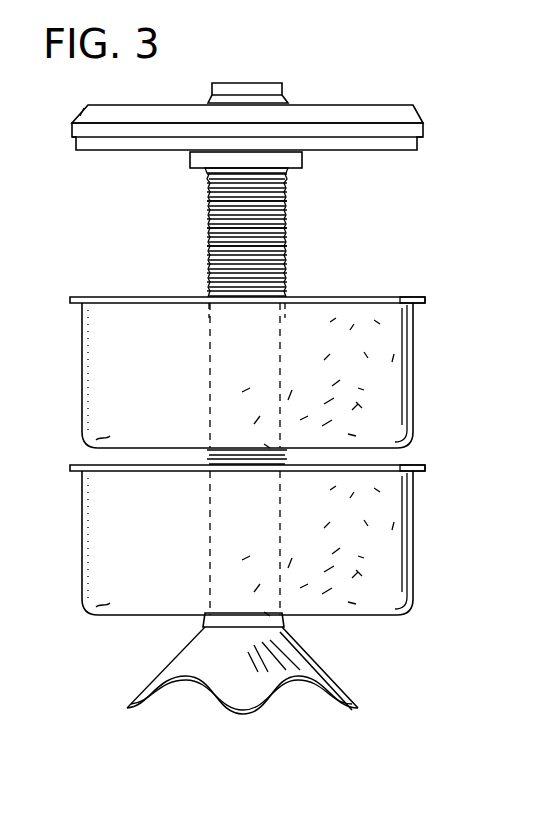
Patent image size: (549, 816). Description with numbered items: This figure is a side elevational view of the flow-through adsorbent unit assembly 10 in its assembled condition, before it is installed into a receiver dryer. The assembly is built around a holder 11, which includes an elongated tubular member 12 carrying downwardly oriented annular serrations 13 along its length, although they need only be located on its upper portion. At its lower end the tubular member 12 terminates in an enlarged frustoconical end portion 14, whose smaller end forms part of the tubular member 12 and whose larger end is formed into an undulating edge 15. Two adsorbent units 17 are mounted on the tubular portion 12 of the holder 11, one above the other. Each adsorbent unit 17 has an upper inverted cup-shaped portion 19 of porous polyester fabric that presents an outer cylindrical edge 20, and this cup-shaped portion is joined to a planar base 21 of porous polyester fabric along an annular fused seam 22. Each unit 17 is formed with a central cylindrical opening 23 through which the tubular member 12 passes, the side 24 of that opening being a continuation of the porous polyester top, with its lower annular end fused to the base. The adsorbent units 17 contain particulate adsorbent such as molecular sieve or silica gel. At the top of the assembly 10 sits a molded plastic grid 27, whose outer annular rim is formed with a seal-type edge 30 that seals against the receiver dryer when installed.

The adsorbent unit assembly 10 is at (420, 200).
The holder 11 is at (285, 85).
The elongated member 12 is at (290, 210).
The annular serrations 13 is at (207, 209).
The frustoconical end portion 14 is at (320, 668).
The undulating edge 15 is at (256, 714).
The adsorbent unit 17 is at (412, 336).
The inverted cup-shaped portion 19 is at (404, 426).
The outer cylindrical edge 20 is at (413, 378).
The planar base 21 is at (100, 297).
The annular fused seam 22 is at (425, 297).
The central cylindrical opening 23 is at (228, 346).
The side of central opening 24 is at (270, 374).
The molded plastic grid 27 is at (410, 105).
The seal-type edge 30 is at (74, 128).